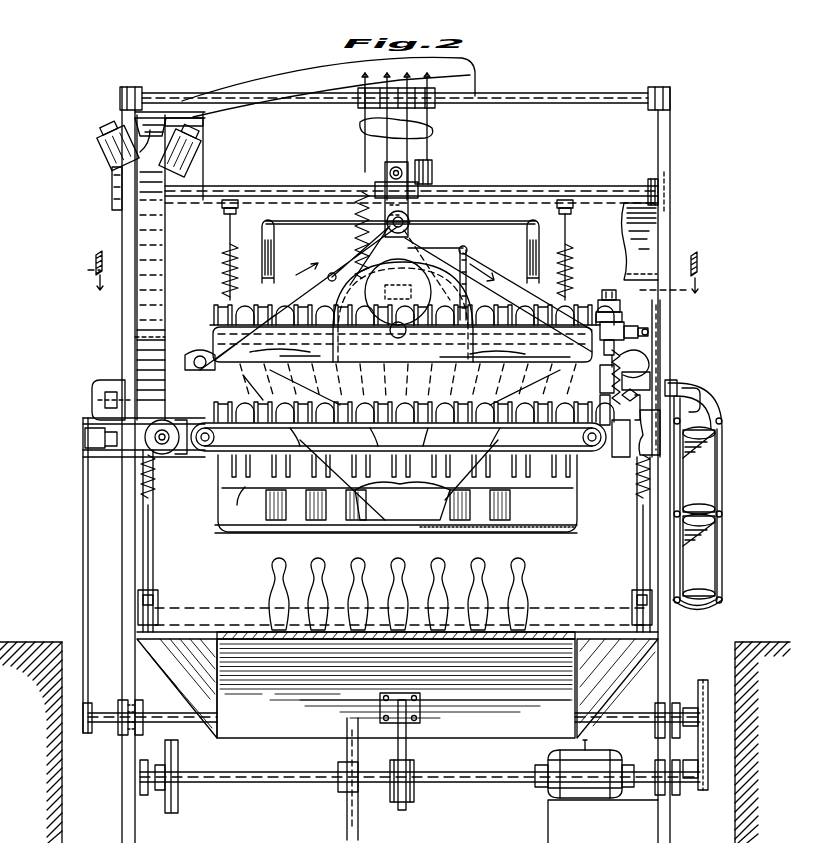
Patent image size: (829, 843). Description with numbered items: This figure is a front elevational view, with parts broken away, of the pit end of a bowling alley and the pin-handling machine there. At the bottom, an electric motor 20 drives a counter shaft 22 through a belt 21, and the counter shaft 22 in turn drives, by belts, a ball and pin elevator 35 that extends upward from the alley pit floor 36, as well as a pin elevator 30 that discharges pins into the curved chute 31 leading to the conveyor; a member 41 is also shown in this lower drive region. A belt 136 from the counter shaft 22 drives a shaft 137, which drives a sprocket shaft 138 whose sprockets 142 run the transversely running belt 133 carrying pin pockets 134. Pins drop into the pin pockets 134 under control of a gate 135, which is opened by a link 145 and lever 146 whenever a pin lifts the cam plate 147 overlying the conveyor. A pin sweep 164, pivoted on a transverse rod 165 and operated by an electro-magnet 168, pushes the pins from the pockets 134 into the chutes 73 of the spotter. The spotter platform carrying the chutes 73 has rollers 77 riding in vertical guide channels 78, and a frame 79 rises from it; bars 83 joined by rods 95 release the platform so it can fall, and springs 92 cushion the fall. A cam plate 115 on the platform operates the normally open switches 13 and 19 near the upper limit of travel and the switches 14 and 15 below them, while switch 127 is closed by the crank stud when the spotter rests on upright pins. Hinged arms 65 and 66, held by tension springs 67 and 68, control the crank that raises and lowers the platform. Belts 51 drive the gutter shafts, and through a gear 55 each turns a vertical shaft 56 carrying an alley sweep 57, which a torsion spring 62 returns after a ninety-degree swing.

The switch 13 is at (601, 303).
The switch 14 is at (648, 358).
The switch 15 is at (604, 450).
The switch 19 is at (610, 290).
The electric motor 20 is at (610, 750).
The belt 21 is at (704, 738).
The counter shaft 22 is at (173, 718).
The pin elevator 30 is at (431, 148).
The curved chute 31 is at (274, 71).
The ball and pin elevator 35 is at (447, 792).
The alley pit floor 36 is at (258, 740).
The connecting rod 41 is at (406, 736).
The belts 51 is at (340, 263).
The gear 55 is at (125, 372).
The vertical shaft 56 is at (156, 539).
The alley sweep 57 is at (164, 607).
The torsion spring 62 is at (158, 484).
The hinged arm 65 is at (428, 234).
The hinged arm 66 is at (330, 274).
The tension spring 67 is at (446, 252).
The tension spring 68 is at (356, 212).
The chutes 73 is at (284, 310).
The rollers 77 is at (135, 338).
The vertical guide channels 78 is at (661, 332).
The frame 79 is at (223, 500).
The bars 83 is at (274, 238).
The springs 92 is at (228, 249).
The rods 95 is at (471, 223).
The cam plate 115 is at (619, 312).
The switch 127 is at (481, 262).
The transversely running belt 133 is at (402, 461).
The pin pockets 134 is at (248, 496).
The gate 135 is at (165, 353).
The belt 136 is at (83, 541).
The shaft 137 is at (158, 452).
The sprocket shaft 138 is at (167, 453).
The sprockets 142 is at (215, 438).
The link 145 is at (207, 171).
The lever 146 is at (200, 128).
The cam plate 147 is at (140, 118).
The pin sweep 164 is at (335, 309).
The transverse rod 165 is at (563, 190).
The electro-magnet 168 is at (385, 229).